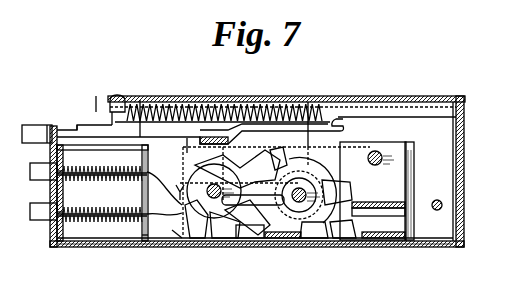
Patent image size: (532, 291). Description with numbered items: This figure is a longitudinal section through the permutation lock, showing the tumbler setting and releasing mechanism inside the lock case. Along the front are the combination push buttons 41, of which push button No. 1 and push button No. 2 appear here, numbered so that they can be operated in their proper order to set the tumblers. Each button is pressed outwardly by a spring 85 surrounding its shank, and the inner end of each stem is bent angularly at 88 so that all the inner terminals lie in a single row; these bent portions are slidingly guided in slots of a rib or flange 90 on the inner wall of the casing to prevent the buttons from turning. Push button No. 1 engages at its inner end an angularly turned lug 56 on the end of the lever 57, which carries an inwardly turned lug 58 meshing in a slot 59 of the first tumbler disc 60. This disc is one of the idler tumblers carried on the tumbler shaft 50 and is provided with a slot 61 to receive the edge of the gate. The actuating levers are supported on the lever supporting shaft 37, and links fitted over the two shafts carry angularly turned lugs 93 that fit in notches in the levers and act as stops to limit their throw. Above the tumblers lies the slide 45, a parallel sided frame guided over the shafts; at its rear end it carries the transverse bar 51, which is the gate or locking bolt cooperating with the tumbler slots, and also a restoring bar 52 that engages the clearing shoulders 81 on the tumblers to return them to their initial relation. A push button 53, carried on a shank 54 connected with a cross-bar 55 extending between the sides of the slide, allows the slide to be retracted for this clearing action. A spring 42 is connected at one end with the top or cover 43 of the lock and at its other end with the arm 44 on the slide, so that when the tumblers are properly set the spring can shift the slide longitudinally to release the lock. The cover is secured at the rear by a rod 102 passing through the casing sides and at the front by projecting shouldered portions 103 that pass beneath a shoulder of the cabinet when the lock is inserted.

The push button No. 1 is at (46, 211).
The push button No. 2 is at (46, 171).
The lever supporting shaft 37 is at (235, 192).
The push buttons 41 is at (30, 210).
The spring 42 is at (190, 104).
The top or cover 43 is at (150, 104).
The arm 44 is at (346, 127).
The slide 45 is at (368, 145).
The tumbler shaft 50 is at (325, 185).
The transverse bar 51 is at (380, 200).
The restoring bar 52 is at (312, 238).
The push button 53 is at (33, 128).
The shank 54 is at (85, 133).
The cross-bar 55 is at (219, 135).
The angularly turned lug 56 is at (200, 238).
The lever 57 is at (224, 238).
The inwardly turned lug 58 is at (245, 238).
The slot 59 is at (278, 238).
The first tumbler disc 60 is at (345, 240).
The slot 61 is at (365, 238).
The clearing shoulders 81 is at (321, 246).
The springs 85 is at (103, 208).
The angularly bent inner end portions 88 is at (146, 240).
The rib or flange 90 is at (176, 240).
The angularly turned lugs 93 is at (180, 184).
The rod 102 is at (443, 205).
The projecting shouldered portions 103 is at (88, 96).